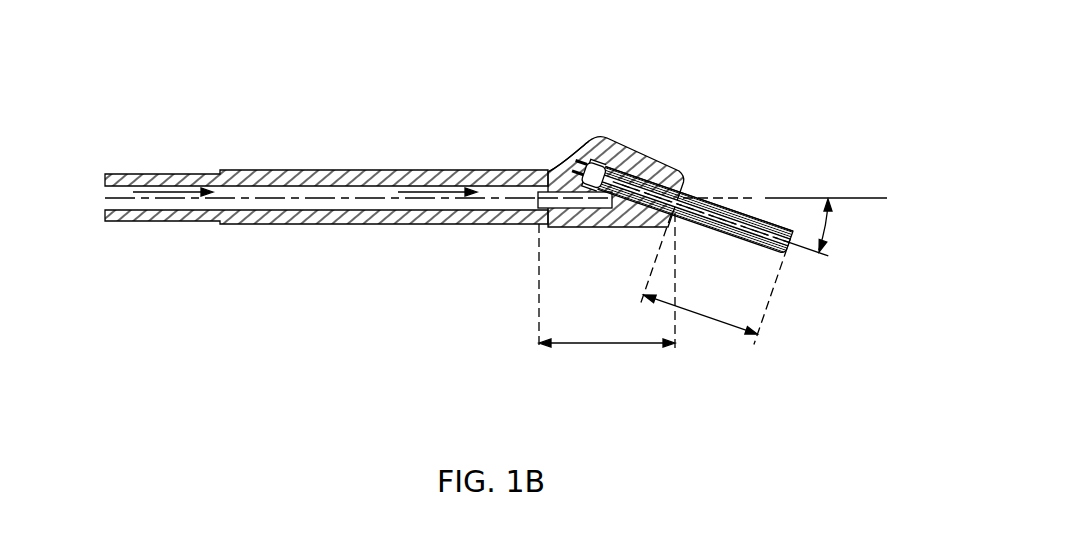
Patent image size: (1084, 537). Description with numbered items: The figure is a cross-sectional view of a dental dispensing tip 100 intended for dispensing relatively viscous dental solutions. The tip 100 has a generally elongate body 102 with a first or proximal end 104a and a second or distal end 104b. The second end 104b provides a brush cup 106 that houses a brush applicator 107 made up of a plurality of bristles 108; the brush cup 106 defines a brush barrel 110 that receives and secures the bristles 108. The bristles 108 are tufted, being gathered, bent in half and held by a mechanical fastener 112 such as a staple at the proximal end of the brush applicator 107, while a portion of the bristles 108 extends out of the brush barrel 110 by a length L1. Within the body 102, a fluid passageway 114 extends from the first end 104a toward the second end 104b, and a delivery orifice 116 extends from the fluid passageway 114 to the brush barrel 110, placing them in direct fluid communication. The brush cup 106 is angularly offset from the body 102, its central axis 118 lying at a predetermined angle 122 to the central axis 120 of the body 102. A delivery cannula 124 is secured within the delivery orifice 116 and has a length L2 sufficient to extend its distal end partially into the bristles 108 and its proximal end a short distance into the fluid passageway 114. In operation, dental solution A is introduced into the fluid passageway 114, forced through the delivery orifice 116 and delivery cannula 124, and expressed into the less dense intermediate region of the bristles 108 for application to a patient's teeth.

The dental dispensing tip 100 is at (345, 58).
The elongate body 102 is at (361, 225).
The first end 104a is at (136, 236).
The second end 104b is at (709, 152).
The brush cup 106 is at (668, 170).
The brush applicator 107 is at (802, 271).
The bristles 108 is at (718, 231).
The brush barrel 110 is at (633, 170).
The mechanical fastener 112 is at (588, 147).
The fluid passageway 114 is at (268, 191).
The delivery orifice 116 is at (582, 209).
The central axis of the brush cup 118 is at (777, 218).
The central axis of the body 120 is at (868, 197).
The angle 122 is at (829, 222).
The delivery cannula 124 is at (548, 184).
The dental solution A is at (168, 190).
The length L1 is at (705, 320).
The length L2 is at (619, 348).